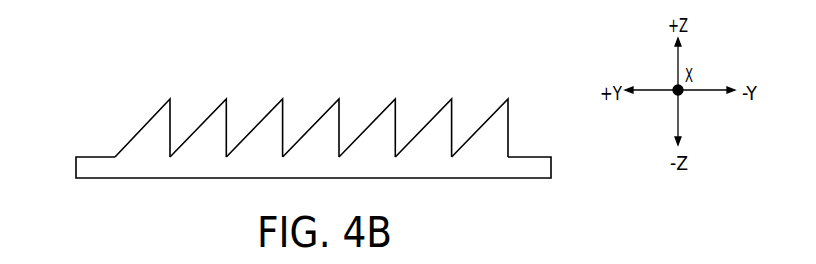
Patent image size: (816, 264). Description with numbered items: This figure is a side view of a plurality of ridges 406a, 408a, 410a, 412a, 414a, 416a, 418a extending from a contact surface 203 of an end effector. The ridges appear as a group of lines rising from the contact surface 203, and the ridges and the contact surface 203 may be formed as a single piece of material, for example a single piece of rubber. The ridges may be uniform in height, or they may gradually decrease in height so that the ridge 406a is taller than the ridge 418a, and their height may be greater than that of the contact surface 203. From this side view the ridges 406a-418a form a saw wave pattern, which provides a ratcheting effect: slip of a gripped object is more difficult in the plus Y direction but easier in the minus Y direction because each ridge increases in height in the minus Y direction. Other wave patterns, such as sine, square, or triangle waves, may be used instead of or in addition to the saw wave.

The contact surface 203 is at (118, 180).
The ridge 406a is at (137, 134).
The ridge 408a is at (207, 118).
The ridge 410a is at (263, 117).
The ridge 412a is at (327, 111).
The ridge 414a is at (383, 112).
The ridge 416a is at (442, 110).
The ridge 418a is at (503, 104).